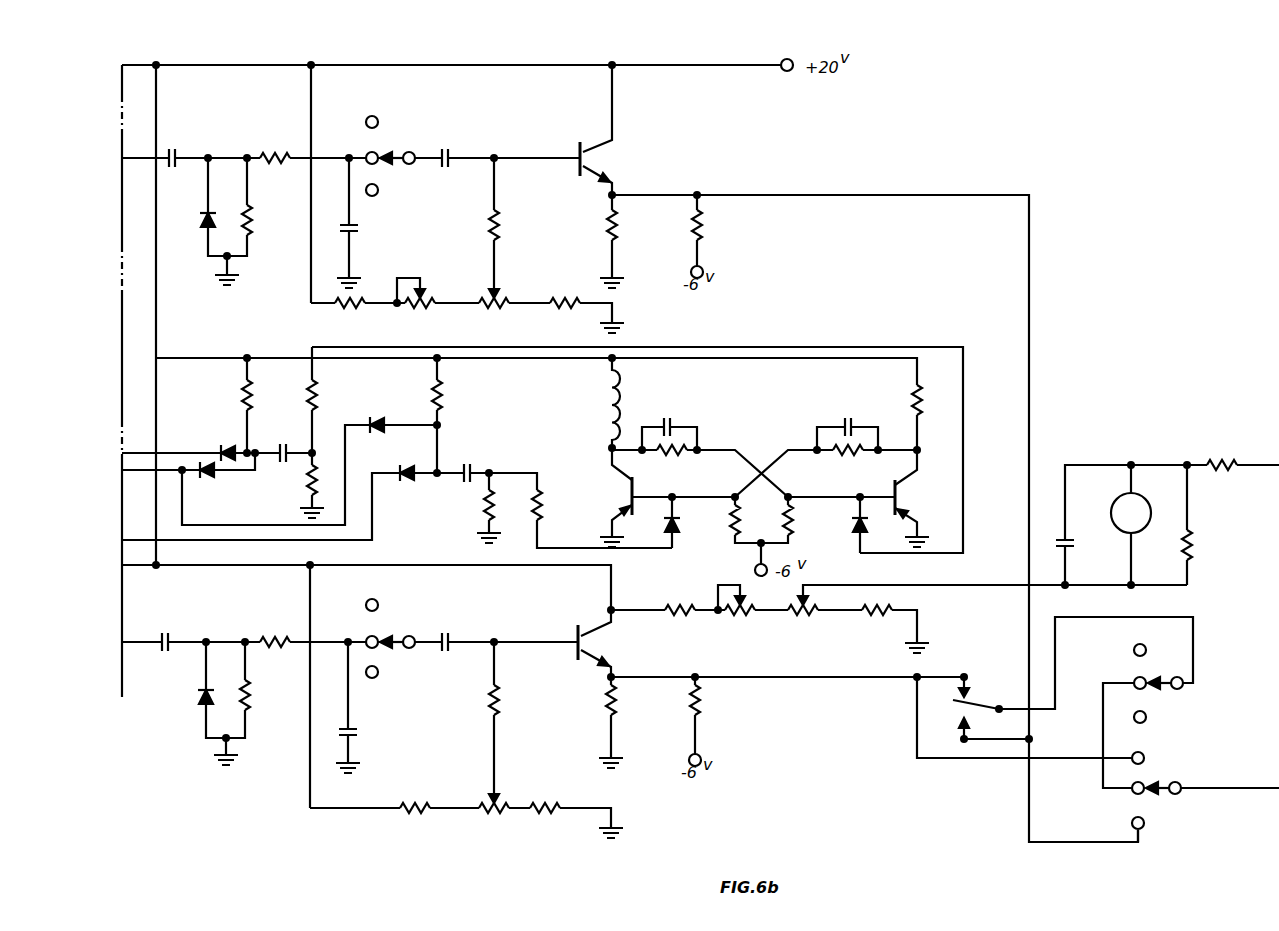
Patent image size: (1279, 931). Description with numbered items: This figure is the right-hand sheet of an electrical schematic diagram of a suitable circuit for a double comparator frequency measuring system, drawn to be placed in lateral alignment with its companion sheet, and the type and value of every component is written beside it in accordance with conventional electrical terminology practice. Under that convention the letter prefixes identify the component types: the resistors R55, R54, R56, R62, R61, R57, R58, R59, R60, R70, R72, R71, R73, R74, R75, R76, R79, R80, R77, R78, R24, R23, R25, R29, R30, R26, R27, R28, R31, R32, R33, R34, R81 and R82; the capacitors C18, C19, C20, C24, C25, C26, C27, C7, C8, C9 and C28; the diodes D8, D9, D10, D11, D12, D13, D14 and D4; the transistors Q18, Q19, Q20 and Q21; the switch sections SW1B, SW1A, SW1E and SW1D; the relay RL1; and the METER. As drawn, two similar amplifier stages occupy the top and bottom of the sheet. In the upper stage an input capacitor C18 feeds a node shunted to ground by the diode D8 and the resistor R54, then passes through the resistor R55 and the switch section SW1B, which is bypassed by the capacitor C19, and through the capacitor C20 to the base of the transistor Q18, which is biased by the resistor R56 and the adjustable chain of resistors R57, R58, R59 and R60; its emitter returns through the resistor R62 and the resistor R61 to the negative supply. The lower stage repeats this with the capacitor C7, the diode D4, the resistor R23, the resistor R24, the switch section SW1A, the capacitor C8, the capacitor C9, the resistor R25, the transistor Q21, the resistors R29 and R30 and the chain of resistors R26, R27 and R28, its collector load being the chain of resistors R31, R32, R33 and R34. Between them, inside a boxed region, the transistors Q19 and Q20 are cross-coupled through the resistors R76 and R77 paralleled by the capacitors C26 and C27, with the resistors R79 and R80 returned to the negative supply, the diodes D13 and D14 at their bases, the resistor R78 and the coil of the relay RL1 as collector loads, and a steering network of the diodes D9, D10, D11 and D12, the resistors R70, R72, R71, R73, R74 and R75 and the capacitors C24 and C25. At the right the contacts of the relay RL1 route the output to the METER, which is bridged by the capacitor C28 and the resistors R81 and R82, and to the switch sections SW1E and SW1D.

The capacitor .15 Mfd C18 is at (188, 141).
The resistor 22K R55 is at (274, 139).
The diode D8 is at (193, 220).
The resistor 100K R54 is at (271, 222).
The switch section SW1B is at (399, 158).
The capacitor .15 Mfd C19 is at (380, 224).
The capacitor .01 Mfd C20 is at (460, 141).
The resistor 10 MEG R56 is at (525, 251).
The transistor UC752 Q18 is at (626, 130).
The resistor 22K R62 is at (631, 224).
The resistor 47K R61 is at (717, 224).
The resistor 20K R57 is at (349, 320).
The potentiometer 500 ohm R58 is at (418, 315).
The potentiometer 1K R59 is at (493, 320).
The resistor 2.2K R60 is at (561, 320).
The resistor 22K R70 is at (265, 393).
The resistor 4.7K R72 is at (332, 393).
The diode D9 is at (223, 440).
The capacitor 680 Pf C24 is at (284, 436).
The diode D10 is at (208, 480).
The resistor 100K R71 is at (289, 484).
The diode D11 is at (387, 434).
The diode D12 is at (412, 483).
The resistor 22K R73 is at (457, 393).
The capacitor 680 Pf C25 is at (470, 454).
The resistor 100K R74 is at (467, 507).
The resistor 4.7K R75 is at (557, 507).
The relay RL1 is at (799, 548).
The transistor TN55 Q19 is at (604, 492).
The diode D13 is at (686, 535).
The capacitor 200 Pf C26 is at (667, 409).
The resistor 27K R76 is at (671, 470).
The resistor 47K R79 is at (718, 518).
The resistor 47K R80 is at (807, 518).
The capacitor 200 Pf C27 is at (842, 409).
The resistor 27K R77 is at (846, 470).
The resistor 1.2K R78 is at (938, 396).
The transistor TN55 Q20 is at (928, 493).
The diode D14 is at (850, 536).
The capacitor .15 Mfd C7 is at (172, 625).
The resistor 22K R24 is at (274, 623).
The diode D4 is at (193, 707).
The resistor 100K R23 is at (269, 700).
The switch section SW1A is at (399, 641).
The capacitor .15 Mfd C8 is at (377, 732).
The capacitor .01 Mfd C9 is at (458, 625).
The resistor 10 MEG R25 is at (525, 742).
The transistor UC752 Q21 is at (569, 638).
The resistor 22K R29 is at (630, 701).
The resistor 47K R30 is at (715, 701).
The resistor 20K R26 is at (414, 826).
The potentiometer 1K R27 is at (492, 826).
The resistor 2.2K R28 is at (542, 826).
The resistor 15K R31 is at (677, 629).
The potentiometer 100 ohm R32 is at (734, 624).
The potentiometer 1K R33 is at (803, 624).
The resistor 3.9K R34 is at (874, 629).
The meter METER is at (1110, 510).
The capacitor 50 Mfd C28 is at (1091, 546).
The resistor R81 is at (1206, 539).
The resistor R82 is at (1223, 477).
The switch section SW1E is at (1176, 683).
The switch section SW1D is at (1176, 790).